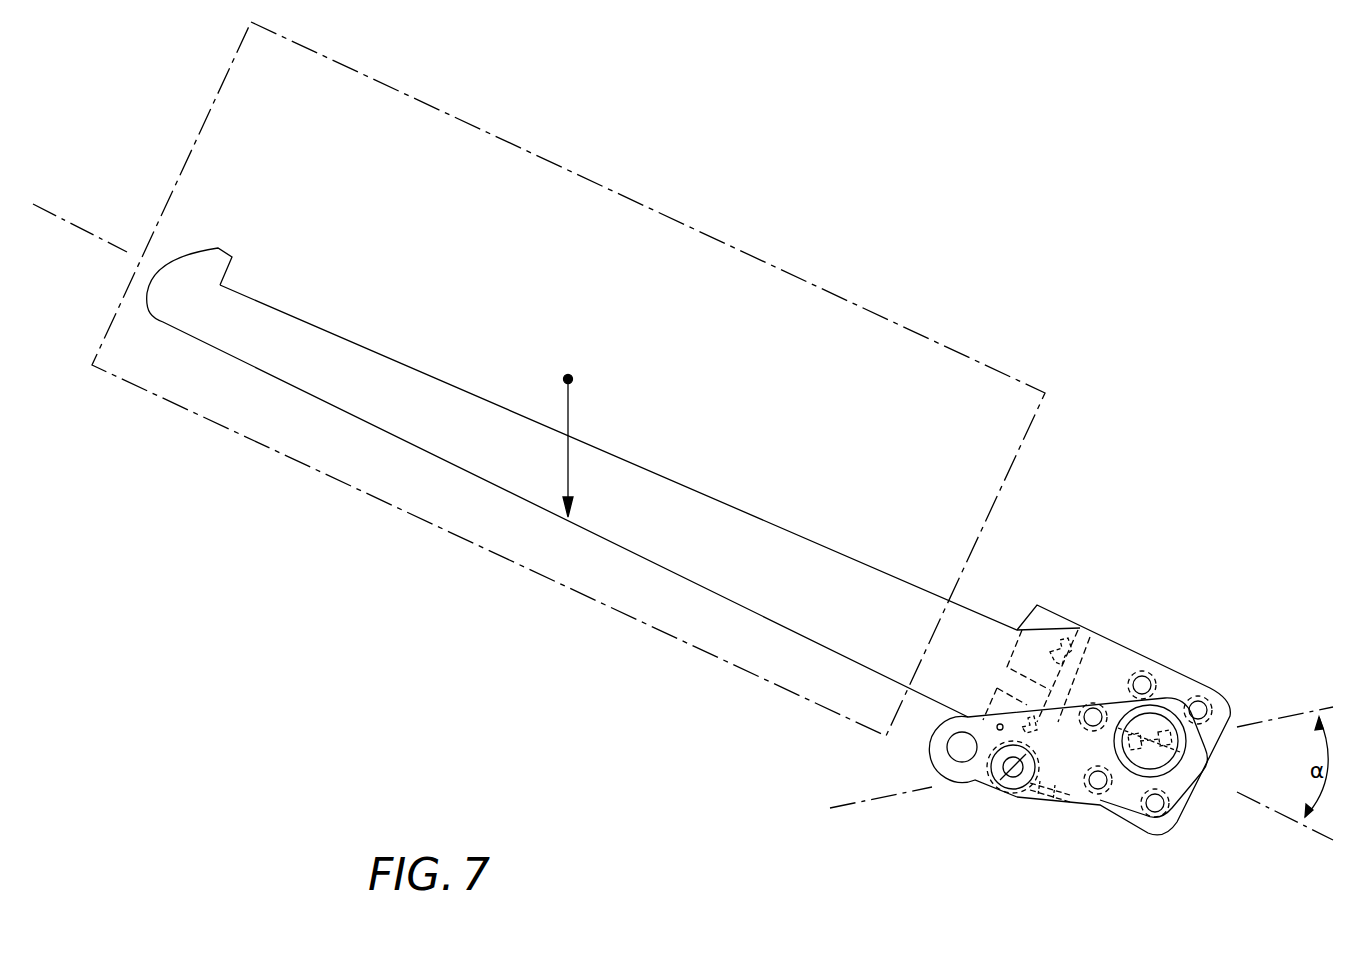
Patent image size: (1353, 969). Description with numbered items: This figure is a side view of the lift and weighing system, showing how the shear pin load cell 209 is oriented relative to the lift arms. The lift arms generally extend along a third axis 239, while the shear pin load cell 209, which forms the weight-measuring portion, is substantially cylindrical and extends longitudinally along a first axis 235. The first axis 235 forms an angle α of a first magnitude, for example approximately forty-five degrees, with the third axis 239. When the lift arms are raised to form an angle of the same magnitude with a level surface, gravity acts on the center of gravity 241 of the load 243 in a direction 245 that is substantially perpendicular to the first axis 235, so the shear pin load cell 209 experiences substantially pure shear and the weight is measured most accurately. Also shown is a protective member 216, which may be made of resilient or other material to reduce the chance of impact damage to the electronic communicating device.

The shear pin load cell 209 is at (1133, 770).
The protective member 216 is at (1037, 605).
The first axis 235 is at (878, 802).
The third axis 239 is at (83, 230).
The center of gravity 241 is at (568, 379).
The load 243 is at (927, 336).
The direction 245 is at (569, 421).